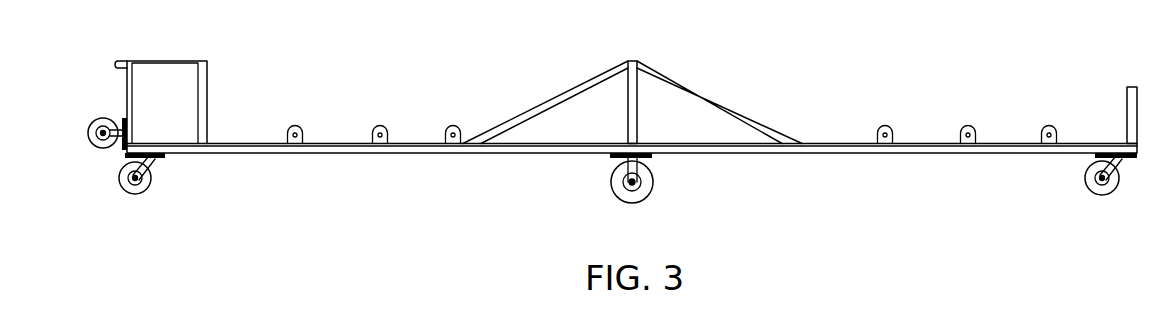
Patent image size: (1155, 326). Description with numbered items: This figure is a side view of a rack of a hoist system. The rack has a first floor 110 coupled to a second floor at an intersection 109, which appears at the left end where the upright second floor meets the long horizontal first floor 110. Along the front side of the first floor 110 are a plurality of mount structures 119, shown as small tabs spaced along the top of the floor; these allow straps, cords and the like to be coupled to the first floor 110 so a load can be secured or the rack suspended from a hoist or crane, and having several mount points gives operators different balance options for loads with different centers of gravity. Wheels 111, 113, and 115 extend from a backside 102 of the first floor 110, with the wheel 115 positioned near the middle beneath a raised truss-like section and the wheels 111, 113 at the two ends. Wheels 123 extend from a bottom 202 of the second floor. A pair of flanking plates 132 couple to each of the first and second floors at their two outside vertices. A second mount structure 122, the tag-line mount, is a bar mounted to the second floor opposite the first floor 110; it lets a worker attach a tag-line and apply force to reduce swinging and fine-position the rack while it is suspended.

The backside 102 is at (801, 175).
The intersection 109 is at (106, 166).
The first floor 110 is at (243, 143).
The wheel 111 is at (1085, 181).
The wheel 113 is at (152, 188).
The wheel 115 is at (611, 184).
The mount structures 119 is at (1043, 130).
The second mount structure (tag-line mount) 122 is at (116, 62).
The wheels 123 is at (86, 135).
The flanking plates 132 is at (170, 70).
The bottom 202 is at (112, 87).